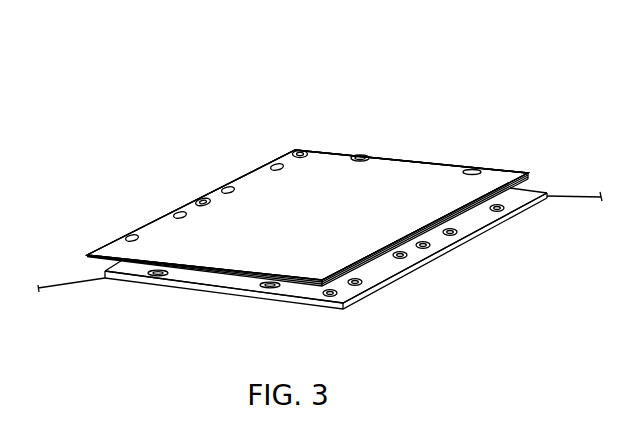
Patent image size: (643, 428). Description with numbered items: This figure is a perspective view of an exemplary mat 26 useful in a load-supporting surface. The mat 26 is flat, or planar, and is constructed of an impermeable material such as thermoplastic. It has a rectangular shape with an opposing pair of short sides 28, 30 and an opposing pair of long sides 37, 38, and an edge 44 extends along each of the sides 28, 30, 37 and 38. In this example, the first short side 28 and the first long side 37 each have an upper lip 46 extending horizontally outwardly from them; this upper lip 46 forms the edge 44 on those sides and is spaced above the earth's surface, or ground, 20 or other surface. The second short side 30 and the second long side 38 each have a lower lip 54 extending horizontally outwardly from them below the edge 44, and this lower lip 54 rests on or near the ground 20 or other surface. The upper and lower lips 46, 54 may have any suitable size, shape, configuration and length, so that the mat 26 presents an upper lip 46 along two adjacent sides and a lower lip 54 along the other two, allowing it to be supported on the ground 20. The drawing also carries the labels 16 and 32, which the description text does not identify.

The panel assembly 16 is at (358, 100).
The earth's surface, or ground 20 is at (80, 284).
The mat 26 is at (290, 237).
The first short side 28 is at (440, 136).
The second short side 30 is at (170, 298).
The fastener holes 32 is at (203, 199).
The first long side 37 is at (168, 145).
The second long side 38 is at (450, 254).
The edge 44 is at (213, 176).
The upper lip 46 is at (158, 226).
The lower lip 54 is at (485, 217).